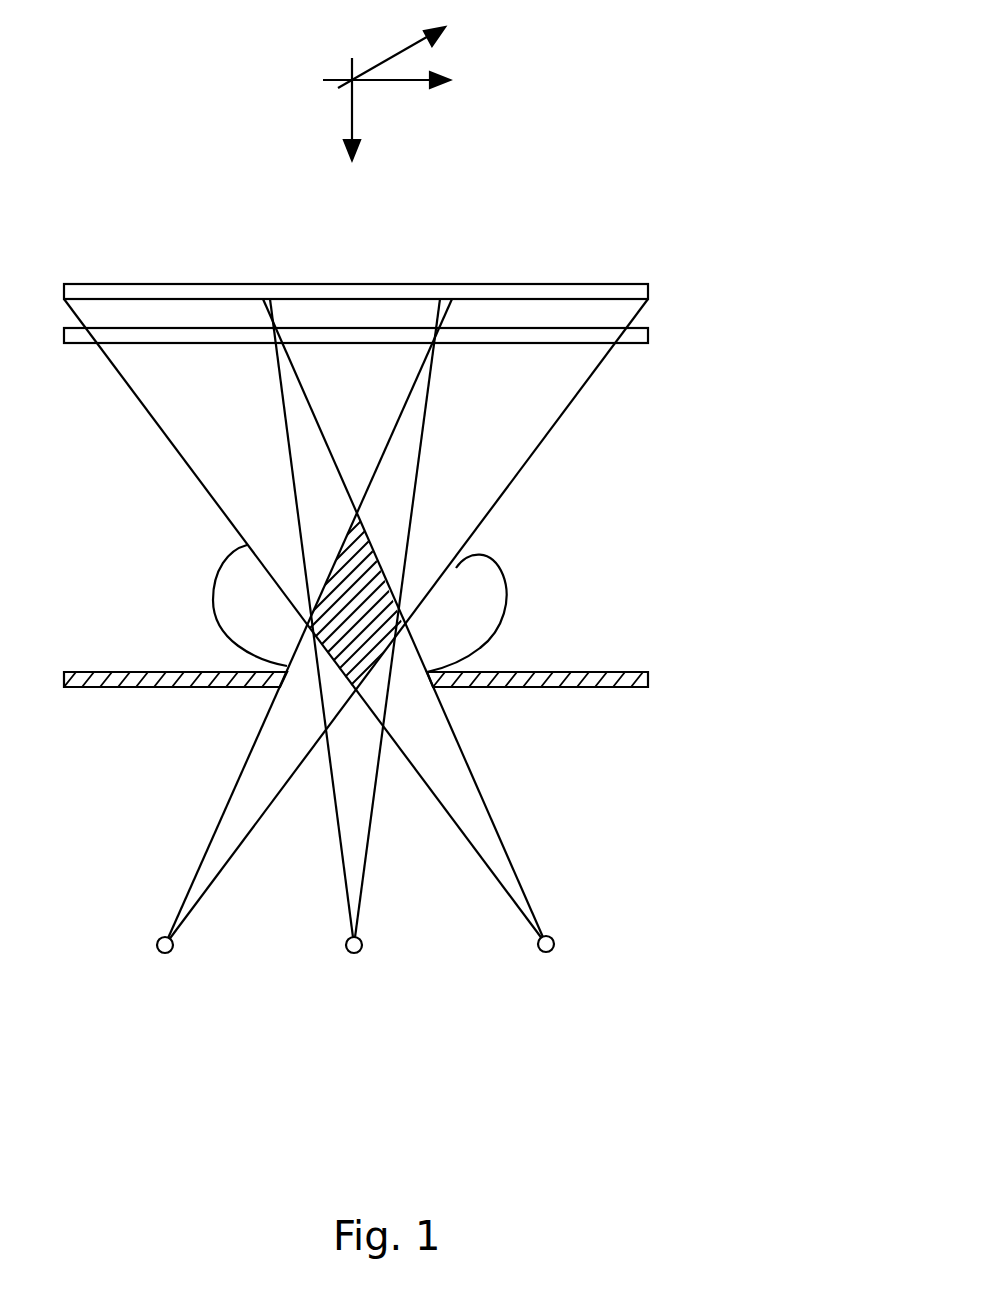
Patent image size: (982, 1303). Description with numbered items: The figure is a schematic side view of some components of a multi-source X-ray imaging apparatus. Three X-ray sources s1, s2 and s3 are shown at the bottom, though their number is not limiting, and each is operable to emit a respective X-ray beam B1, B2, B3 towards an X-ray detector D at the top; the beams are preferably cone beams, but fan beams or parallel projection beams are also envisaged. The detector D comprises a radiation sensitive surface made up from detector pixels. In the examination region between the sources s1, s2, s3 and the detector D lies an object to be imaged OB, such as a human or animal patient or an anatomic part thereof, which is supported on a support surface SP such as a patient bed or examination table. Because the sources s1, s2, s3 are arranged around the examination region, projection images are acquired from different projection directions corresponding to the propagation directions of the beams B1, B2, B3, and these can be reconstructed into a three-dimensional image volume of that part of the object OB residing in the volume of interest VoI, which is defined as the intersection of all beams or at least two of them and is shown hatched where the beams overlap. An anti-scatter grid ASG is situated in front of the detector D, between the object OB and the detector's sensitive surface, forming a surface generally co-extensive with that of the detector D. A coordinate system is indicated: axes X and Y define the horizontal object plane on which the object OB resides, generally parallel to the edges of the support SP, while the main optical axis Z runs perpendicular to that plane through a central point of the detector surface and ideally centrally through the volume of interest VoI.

The X-ray detector D is at (624, 284).
The anti-scatter grid ASG is at (649, 335).
The volume of interest VoI is at (365, 572).
The object to be imaged OB is at (485, 608).
The support surface SP is at (651, 677).
The X-ray beam B1 is at (238, 805).
The X-ray beam B2 is at (357, 832).
The X-ray beam B3 is at (483, 798).
The X-ray source s1 is at (158, 953).
The X-ray source s2 is at (352, 955).
The X-ray source s3 is at (553, 955).
The axis X is at (398, 80).
The axis Y is at (405, 48).
The main optical axis Z is at (369, 111).